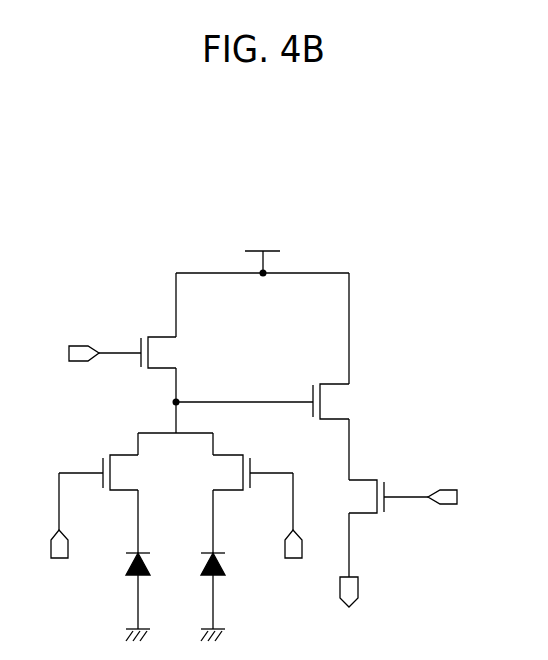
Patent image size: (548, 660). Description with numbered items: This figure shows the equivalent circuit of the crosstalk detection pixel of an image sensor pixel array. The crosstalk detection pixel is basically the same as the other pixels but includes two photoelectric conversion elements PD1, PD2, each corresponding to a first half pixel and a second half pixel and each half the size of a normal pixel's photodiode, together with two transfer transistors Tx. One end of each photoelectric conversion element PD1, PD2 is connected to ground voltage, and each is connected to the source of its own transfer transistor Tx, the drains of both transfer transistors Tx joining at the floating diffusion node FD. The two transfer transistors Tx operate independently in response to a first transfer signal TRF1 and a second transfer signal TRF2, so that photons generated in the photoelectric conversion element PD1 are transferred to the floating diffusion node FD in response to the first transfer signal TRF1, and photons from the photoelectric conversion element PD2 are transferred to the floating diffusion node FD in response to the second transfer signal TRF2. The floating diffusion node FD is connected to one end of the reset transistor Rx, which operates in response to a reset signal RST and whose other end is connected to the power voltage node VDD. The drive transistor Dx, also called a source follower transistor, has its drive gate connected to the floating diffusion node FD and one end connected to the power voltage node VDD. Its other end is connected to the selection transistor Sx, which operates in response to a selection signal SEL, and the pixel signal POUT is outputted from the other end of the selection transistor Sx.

The power voltage node VDD is at (263, 249).
The reset signal RST is at (86, 352).
The reset transistor Rx is at (164, 352).
The floating diffusion node FD is at (232, 404).
The drive transistor Dx is at (337, 401).
The selection transistor Sx is at (364, 496).
The selection signal SEL is at (438, 499).
The pixel signal POUT is at (349, 575).
The transfer transistor Tx is at (176, 472).
The first transfer signal TRF1 is at (72, 530).
The second transfer signal TRF2 is at (280, 530).
The photoelectric conversion element PD1 is at (154, 565).
The photoelectric conversion element PD2 is at (230, 565).